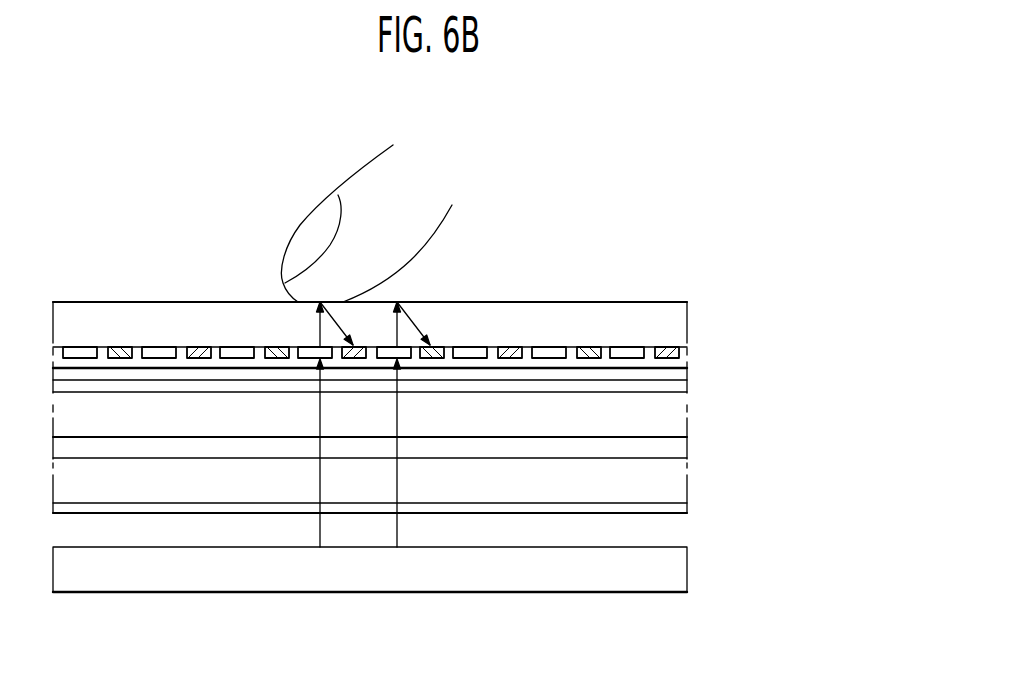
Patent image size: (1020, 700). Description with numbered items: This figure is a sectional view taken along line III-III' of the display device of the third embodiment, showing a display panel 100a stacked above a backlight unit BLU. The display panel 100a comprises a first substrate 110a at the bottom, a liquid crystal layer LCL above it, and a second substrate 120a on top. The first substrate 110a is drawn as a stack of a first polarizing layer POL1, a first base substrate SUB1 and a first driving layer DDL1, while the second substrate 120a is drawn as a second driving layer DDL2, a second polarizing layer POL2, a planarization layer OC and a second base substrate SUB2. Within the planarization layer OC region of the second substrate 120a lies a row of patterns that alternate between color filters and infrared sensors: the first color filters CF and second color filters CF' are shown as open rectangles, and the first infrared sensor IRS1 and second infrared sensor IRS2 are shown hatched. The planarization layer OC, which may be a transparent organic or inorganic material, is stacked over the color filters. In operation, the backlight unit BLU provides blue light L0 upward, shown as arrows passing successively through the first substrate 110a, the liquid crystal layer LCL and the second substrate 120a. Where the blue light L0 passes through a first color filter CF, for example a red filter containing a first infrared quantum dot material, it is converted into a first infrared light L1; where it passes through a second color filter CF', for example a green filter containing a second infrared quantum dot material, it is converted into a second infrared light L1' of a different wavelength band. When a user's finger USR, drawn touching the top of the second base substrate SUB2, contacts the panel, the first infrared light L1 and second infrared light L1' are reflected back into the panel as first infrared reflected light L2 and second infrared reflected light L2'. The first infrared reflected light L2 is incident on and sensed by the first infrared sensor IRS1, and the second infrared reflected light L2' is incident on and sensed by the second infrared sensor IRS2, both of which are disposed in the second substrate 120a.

The user's finger USR is at (369, 161).
The first infrared light L1 is at (275, 272).
The first infrared reflected light L2 is at (345, 293).
The second infrared light L1' is at (392, 294).
The second infrared reflected light L2' is at (431, 302).
The blue light L0 is at (320, 530).
The first color filters CF is at (263, 309).
The second color filters CF' is at (389, 392).
The first infrared sensor IRS1 is at (350, 360).
The second infrared sensor IRS2 is at (432, 360).
The second base substrate SUB2 is at (680, 318).
The planarization layer OC is at (680, 361).
The second polarizing layer POL2 is at (680, 374).
The second driving layer DDL2 is at (680, 388).
The second substrate 120a is at (433, 348).
The liquid crystal layer LCL is at (680, 417).
The first driving layer DDL1 is at (680, 445).
The first base substrate SUB1 is at (680, 483).
The first polarizing layer POL1 is at (680, 507).
The first substrate 110a is at (433, 488).
The display panel 100a is at (458, 395).
The backlight unit BLU is at (680, 570).
The section line III is at (52, 612).
The section line III' is at (685, 612).